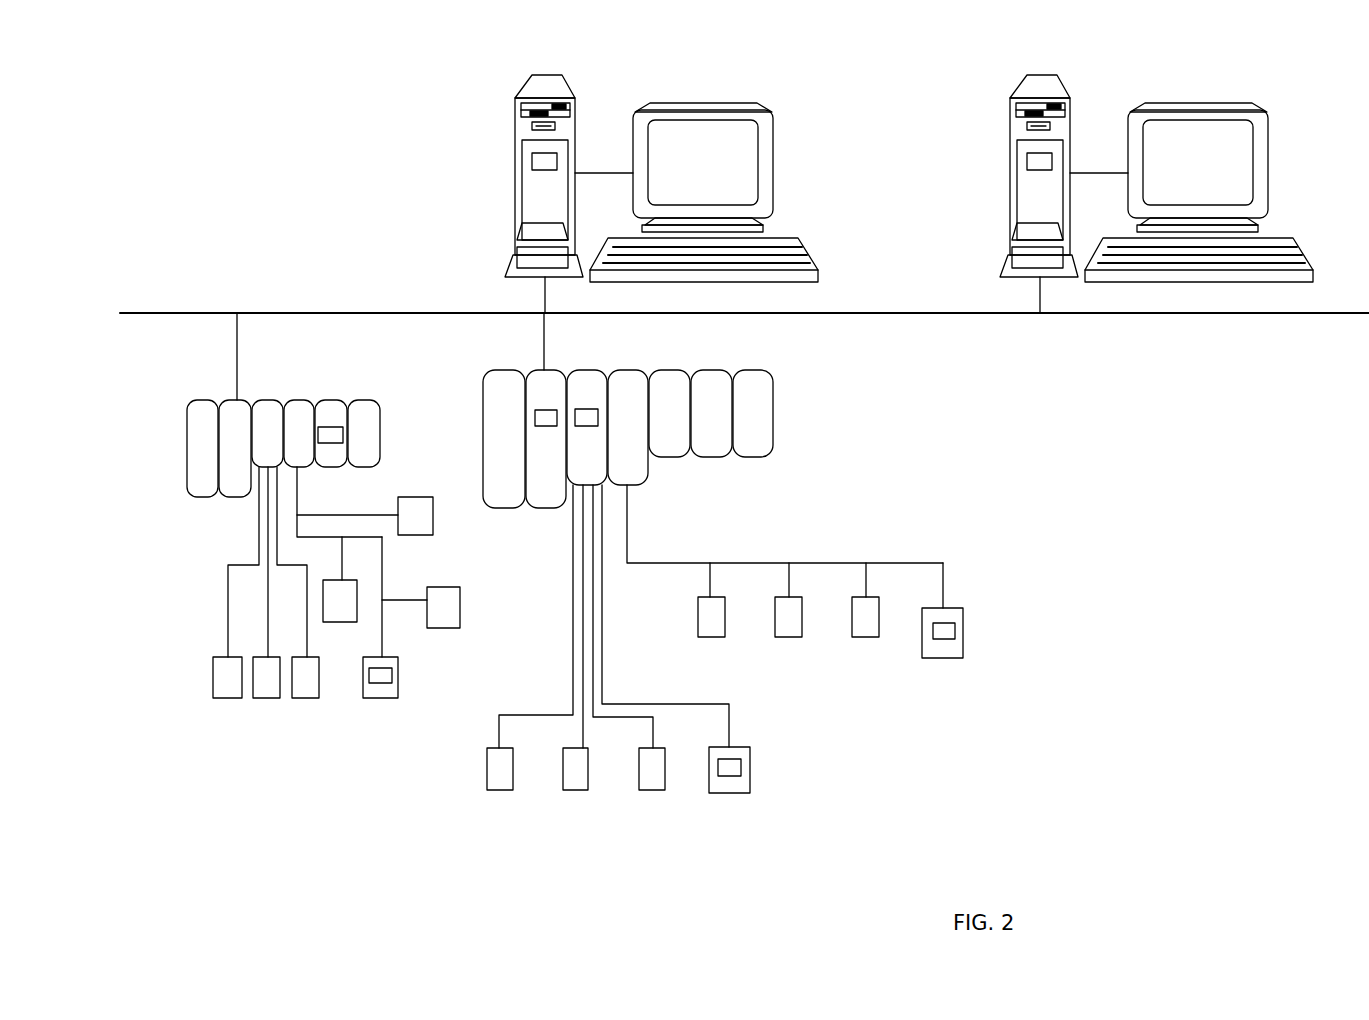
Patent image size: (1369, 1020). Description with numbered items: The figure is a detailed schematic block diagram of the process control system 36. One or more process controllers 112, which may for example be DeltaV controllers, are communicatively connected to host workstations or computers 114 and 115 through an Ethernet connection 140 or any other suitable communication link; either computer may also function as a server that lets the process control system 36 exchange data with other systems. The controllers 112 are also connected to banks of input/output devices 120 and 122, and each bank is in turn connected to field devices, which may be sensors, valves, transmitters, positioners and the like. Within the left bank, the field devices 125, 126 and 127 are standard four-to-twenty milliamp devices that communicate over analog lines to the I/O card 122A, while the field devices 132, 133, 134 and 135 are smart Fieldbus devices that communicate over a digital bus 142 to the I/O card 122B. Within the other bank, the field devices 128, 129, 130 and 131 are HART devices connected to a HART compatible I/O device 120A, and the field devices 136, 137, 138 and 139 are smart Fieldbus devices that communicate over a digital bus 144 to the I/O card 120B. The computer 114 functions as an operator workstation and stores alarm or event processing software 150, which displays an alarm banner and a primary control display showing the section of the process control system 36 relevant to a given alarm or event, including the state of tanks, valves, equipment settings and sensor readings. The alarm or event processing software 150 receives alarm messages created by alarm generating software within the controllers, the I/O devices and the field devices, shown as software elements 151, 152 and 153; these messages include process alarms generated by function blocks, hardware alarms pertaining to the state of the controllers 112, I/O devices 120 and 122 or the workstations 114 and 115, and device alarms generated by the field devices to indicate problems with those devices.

The process control system 36 is at (866, 112).
The host workstation 114 is at (550, 73).
The host workstation 115 is at (1045, 73).
The alarm or event processing software 150 is at (532, 163).
The Ethernet connection 140 is at (287, 313).
The process controller 112 is at (228, 400).
The bank of input/output devices 122 is at (410, 394).
The I/O card 122A is at (270, 400).
The I/O card 122B is at (298, 400).
The alarm generating software element 152 is at (343, 433).
The alarm generating software element 151 is at (542, 426).
The alarm generating software element 153 is at (393, 677).
The digital bus 142 is at (300, 503).
The digital bus 144 is at (668, 562).
The bank of input/output devices 120 is at (845, 390).
The HART compatible I/O device 120A is at (600, 358).
The I/O card 120B is at (632, 370).
The field device 125 is at (228, 698).
The field device 126 is at (262, 698).
The field device 127 is at (312, 698).
The field device 128 is at (500, 790).
The field device 129 is at (575, 790).
The field device 130 is at (650, 790).
The field device 131 is at (730, 793).
The field device 132 is at (435, 512).
The field device 133 is at (450, 628).
The field device 134 is at (377, 698).
The field device 135 is at (345, 622).
The field device 136 is at (712, 637).
The field device 137 is at (790, 637).
The field device 138 is at (868, 637).
The field device 139 is at (942, 658).